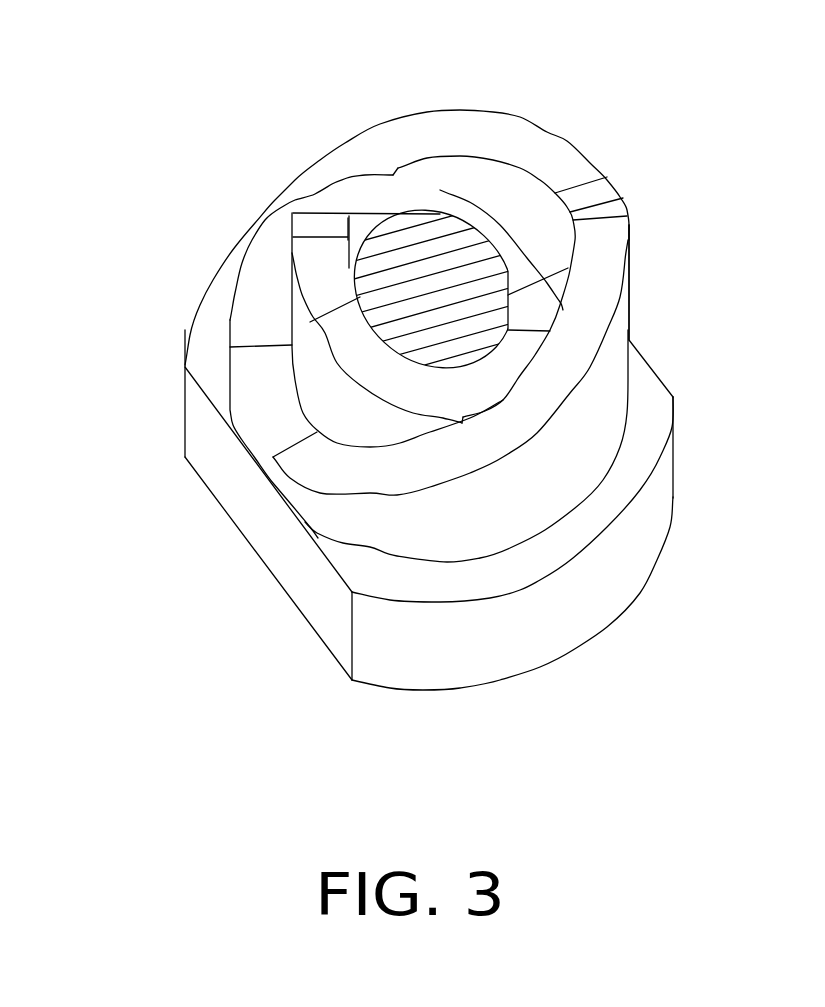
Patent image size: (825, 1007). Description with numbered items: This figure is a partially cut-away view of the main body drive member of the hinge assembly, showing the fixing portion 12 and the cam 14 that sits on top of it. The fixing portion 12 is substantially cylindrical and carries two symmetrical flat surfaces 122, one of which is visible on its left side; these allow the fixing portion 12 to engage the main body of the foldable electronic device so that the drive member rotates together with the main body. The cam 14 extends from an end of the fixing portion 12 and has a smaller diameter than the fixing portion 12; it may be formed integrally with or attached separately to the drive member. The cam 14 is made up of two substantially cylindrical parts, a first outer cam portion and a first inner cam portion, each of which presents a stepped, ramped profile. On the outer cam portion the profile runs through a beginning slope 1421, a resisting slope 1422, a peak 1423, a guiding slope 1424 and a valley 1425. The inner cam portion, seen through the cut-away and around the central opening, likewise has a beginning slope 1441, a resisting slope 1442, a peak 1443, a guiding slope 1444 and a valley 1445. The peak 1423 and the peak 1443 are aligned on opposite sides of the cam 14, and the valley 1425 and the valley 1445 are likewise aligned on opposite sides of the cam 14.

The fixing portion 12 is at (620, 565).
The flat surfaces 122 is at (207, 452).
The cam 14 is at (613, 370).
The beginning slope 1421 is at (468, 137).
The resisting slope 1422 is at (593, 192).
The peak 1423 is at (618, 210).
The guiding slope 1424 is at (607, 247).
The valley 1425 is at (280, 490).
The beginning slope 1441 is at (408, 380).
The resisting slope 1442 is at (315, 277).
The peak 1443 is at (320, 223).
The guiding slope 1444 is at (452, 210).
The valley 1445 is at (528, 330).